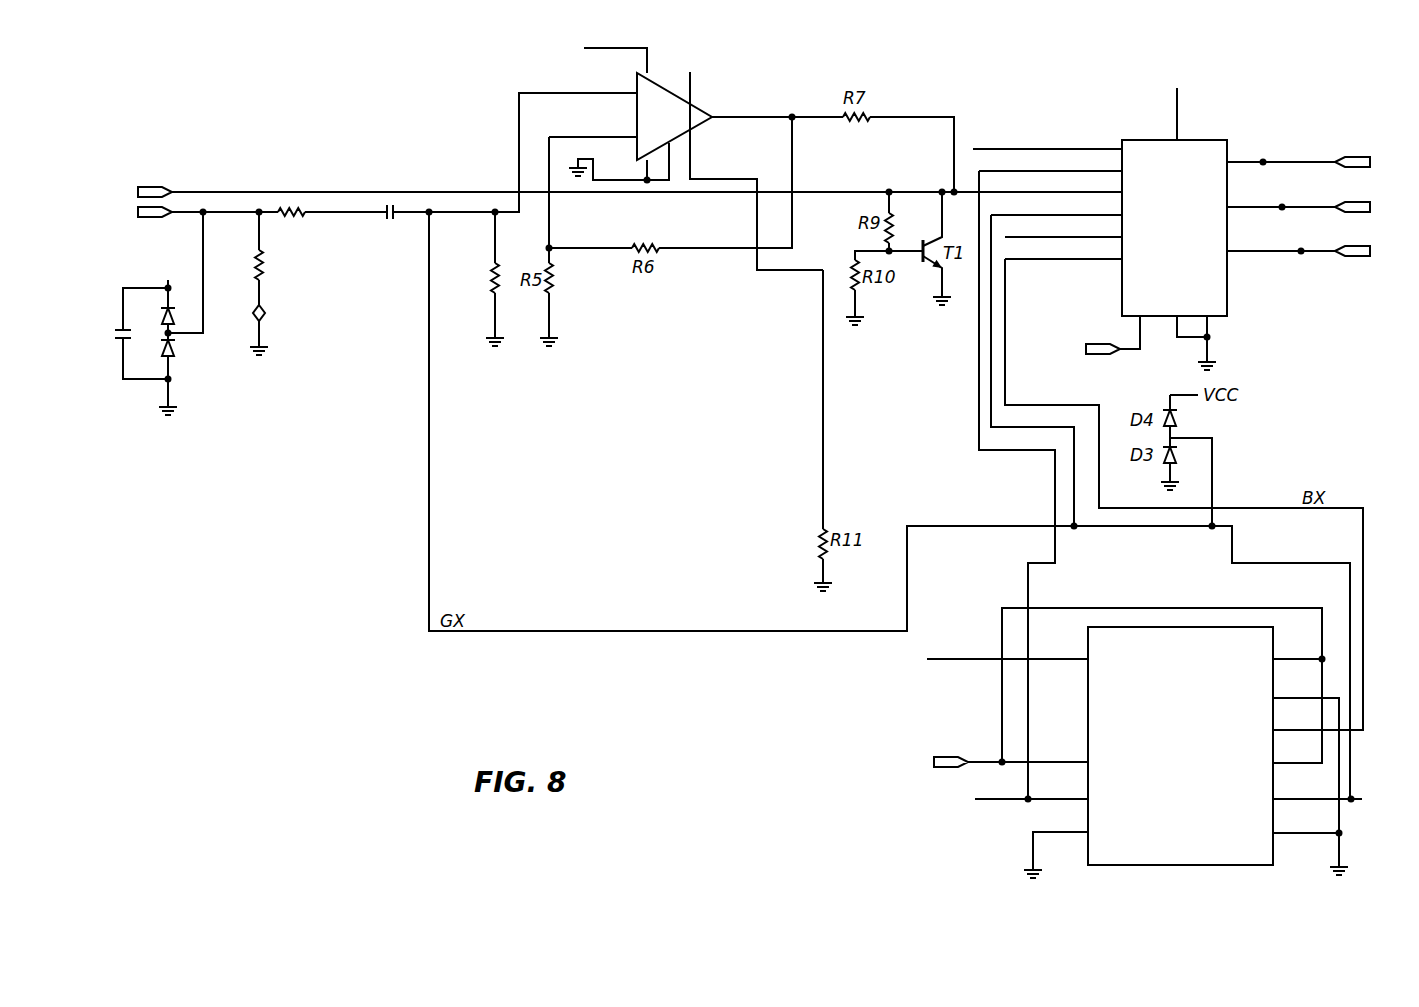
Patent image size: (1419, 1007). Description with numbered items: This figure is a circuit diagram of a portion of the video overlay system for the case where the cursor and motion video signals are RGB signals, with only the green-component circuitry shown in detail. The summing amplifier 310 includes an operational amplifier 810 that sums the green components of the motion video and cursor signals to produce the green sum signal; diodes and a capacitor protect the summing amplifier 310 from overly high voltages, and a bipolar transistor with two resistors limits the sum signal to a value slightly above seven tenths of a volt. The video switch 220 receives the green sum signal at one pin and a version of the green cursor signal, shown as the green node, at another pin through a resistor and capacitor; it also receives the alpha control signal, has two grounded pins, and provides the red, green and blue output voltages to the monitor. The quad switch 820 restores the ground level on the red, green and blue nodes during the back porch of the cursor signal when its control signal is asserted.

The summing amplifier 310 is at (361, 146).
The operational amplifier 810 is at (687, 125).
The video switch 220 is at (1192, 242).
The switch 820 is at (1198, 755).